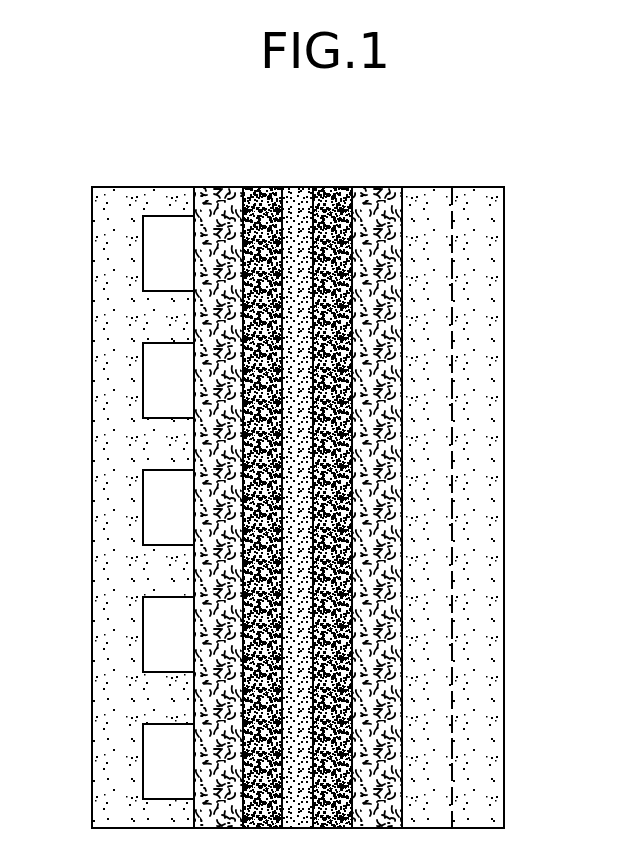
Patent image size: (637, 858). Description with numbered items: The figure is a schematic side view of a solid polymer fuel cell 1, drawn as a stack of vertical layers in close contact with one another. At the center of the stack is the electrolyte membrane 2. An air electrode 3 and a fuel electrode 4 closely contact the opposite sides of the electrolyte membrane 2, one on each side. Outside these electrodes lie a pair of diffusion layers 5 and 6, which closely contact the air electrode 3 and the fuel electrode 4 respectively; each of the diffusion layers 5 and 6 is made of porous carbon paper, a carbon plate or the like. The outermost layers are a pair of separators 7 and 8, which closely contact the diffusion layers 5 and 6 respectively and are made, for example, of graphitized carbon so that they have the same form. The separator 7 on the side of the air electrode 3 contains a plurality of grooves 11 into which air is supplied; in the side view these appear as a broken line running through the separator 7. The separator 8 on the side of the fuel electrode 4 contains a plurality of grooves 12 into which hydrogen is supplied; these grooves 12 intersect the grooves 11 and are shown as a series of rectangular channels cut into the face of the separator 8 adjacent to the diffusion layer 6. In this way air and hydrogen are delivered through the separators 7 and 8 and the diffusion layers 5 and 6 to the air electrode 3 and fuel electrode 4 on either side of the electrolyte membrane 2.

The solid polymer fuel cell 1 is at (510, 277).
The electrolyte membrane 2 is at (296, 186).
The air electrode 3 is at (336, 187).
The fuel electrode 4 is at (264, 187).
The diffusion layer 5 is at (376, 187).
The diffusion layer 6 is at (222, 187).
The separator 7 is at (480, 187).
The separator 8 is at (115, 187).
The grooves 11 is at (437, 408).
The grooves 12 is at (143, 363).